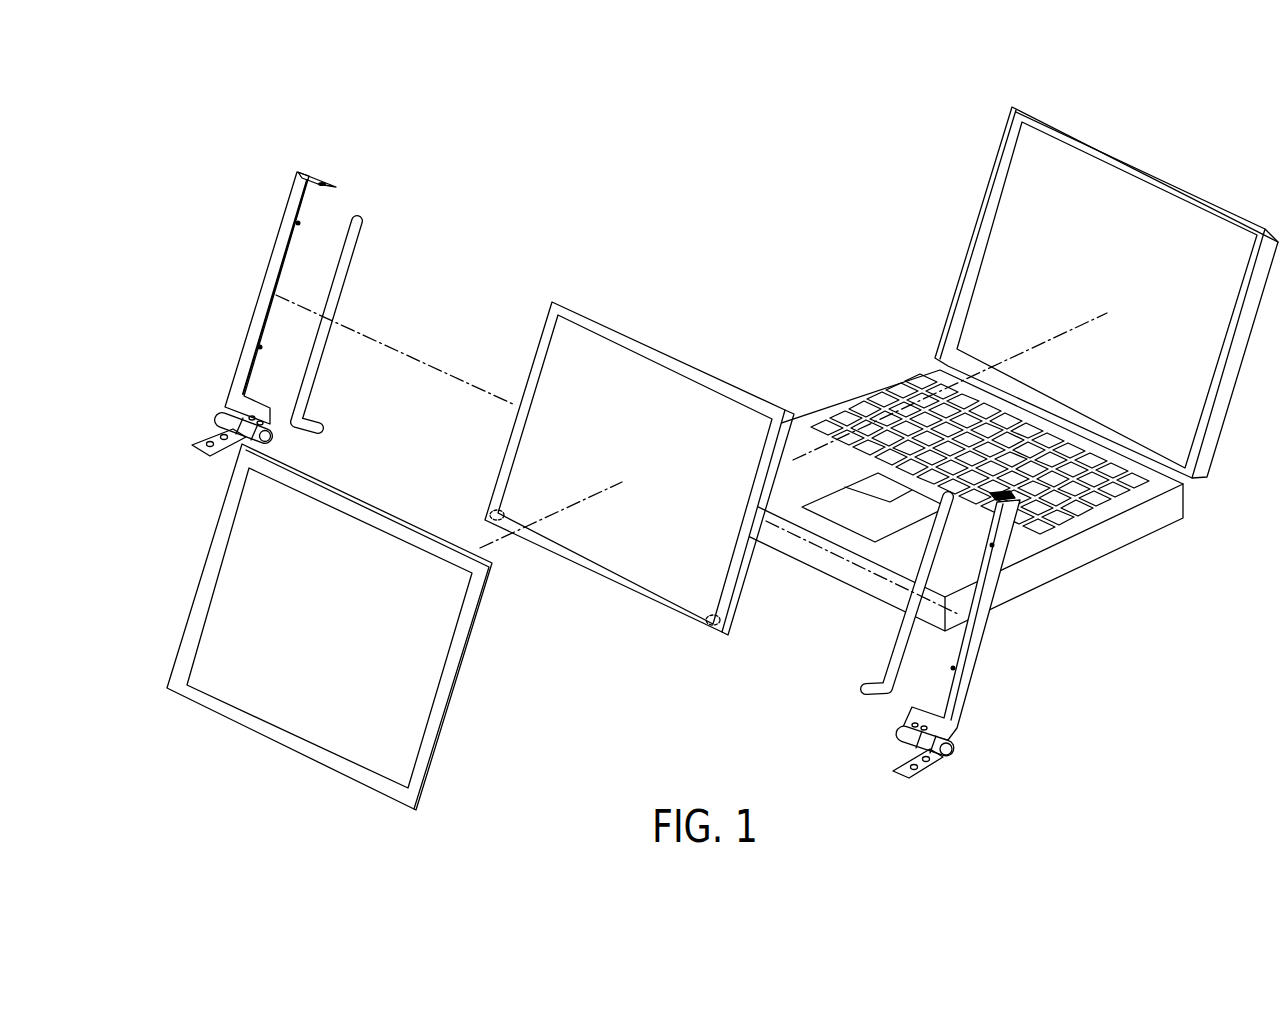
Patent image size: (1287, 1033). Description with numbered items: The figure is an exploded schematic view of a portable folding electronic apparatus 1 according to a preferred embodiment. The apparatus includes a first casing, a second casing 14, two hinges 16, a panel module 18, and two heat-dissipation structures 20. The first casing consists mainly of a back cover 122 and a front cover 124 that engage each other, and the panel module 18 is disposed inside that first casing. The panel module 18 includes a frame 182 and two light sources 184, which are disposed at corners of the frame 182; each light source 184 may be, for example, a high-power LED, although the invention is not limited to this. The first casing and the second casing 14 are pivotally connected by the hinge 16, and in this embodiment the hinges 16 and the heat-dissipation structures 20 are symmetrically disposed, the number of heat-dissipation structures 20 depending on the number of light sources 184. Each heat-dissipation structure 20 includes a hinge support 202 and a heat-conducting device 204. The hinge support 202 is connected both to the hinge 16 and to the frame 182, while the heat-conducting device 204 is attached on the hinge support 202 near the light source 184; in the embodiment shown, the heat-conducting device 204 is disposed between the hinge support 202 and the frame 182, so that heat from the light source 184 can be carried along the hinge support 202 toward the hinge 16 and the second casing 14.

The portable folding electronic apparatus 1 is at (600, 75).
The second casing 14 is at (1097, 553).
The hinge 16 is at (271, 439).
The panel module 18 is at (639, 522).
The frame 182 is at (655, 600).
The light source 184 is at (617, 678).
The heat-dissipation structure 20 is at (673, 395).
The hinge support 202 is at (403, 110).
The heat-conducting device 204 is at (356, 215).
The back cover 122 is at (1130, 190).
The front cover 124 is at (253, 723).